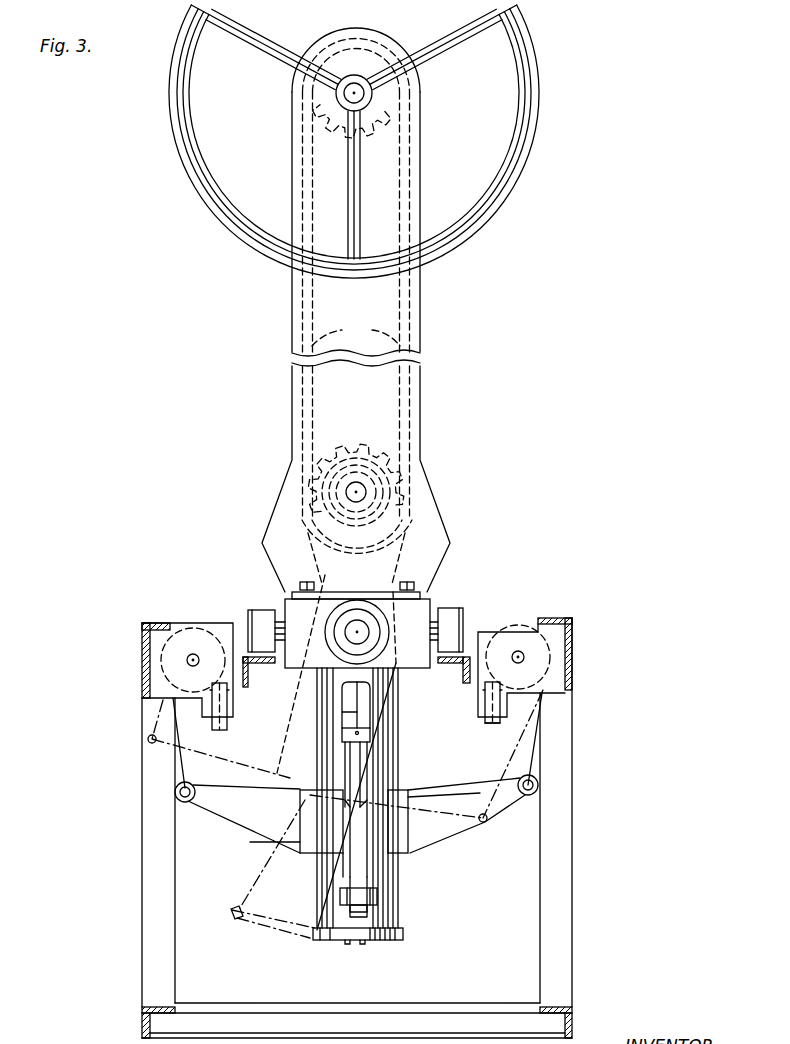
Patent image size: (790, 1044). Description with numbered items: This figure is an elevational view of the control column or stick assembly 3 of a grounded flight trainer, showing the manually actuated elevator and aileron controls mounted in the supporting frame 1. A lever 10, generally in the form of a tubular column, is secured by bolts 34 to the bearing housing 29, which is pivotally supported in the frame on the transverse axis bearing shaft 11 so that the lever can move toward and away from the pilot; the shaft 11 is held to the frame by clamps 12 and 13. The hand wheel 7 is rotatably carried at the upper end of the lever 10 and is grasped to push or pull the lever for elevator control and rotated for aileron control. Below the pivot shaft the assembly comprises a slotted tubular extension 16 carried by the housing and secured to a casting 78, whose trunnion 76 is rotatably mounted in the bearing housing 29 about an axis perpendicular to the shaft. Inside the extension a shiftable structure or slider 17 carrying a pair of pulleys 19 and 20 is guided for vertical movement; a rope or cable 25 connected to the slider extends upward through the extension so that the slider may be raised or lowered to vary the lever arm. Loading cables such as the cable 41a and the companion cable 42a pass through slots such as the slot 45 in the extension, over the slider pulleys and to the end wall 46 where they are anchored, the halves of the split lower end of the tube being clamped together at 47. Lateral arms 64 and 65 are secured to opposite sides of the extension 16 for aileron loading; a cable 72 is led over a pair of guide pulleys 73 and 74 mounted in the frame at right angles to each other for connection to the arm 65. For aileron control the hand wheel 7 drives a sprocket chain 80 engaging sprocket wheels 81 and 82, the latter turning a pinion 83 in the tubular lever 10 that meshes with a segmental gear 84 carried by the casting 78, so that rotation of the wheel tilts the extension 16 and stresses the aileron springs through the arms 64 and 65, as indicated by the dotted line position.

The supporting frame 1 is at (148, 796).
The control column or stick assembly 3 is at (438, 388).
The hand wheel 7 is at (205, 204).
The lever 10 is at (292, 326).
The transverse axis bearing shaft 11 is at (284, 606).
The clamp 12 is at (249, 613).
The clamp 13 is at (456, 611).
The slotted tubular extension 16 is at (398, 757).
The shiftable structure or slider 17 is at (346, 736).
The pulley 19 is at (366, 788).
The pulley 20 is at (344, 804).
The rope or cable 25 is at (342, 712).
The bearing housing 29 is at (430, 600).
The bolts 34 is at (306, 582).
The cable 41a is at (368, 870).
The lower rod 42a is at (345, 870).
The slot 45 is at (366, 694).
The end wall 46 is at (385, 940).
The clamp 47 is at (377, 897).
The lateral arm 64 is at (222, 789).
The lateral arm 65 is at (470, 790).
The cable 72 is at (533, 742).
The guide pulley 73 is at (487, 722).
The guide pulley 74 is at (515, 632).
The trunnion 76 is at (357, 600).
The casting 78 is at (394, 590).
The sprocket chain 80 is at (356, 335).
The sprocket wheel 81 is at (318, 131).
The sprocket wheel 82 is at (356, 447).
The pinion 83 is at (380, 490).
The segmental gear 84 is at (310, 525).